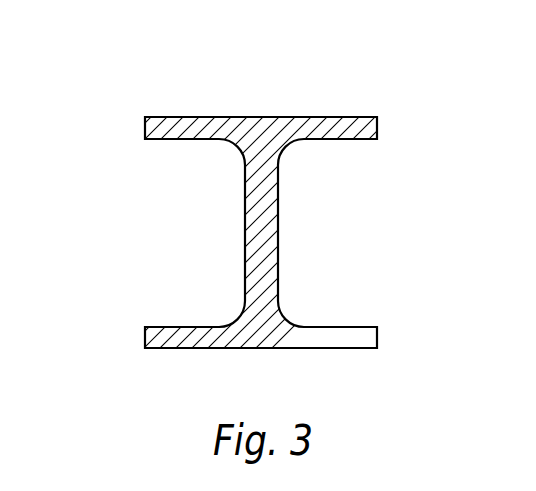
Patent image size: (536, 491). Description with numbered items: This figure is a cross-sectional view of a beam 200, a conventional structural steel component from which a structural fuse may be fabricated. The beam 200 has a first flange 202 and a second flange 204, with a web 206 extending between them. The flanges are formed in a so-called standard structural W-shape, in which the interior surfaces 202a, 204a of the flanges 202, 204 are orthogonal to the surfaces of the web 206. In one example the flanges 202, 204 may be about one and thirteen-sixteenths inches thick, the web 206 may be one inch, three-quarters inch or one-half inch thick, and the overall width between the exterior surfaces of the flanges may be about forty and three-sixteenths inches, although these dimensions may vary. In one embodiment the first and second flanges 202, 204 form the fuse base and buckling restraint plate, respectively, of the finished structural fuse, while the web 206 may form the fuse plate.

The beam 200 is at (152, 78).
The first flange 202 is at (341, 117).
The interior surface of first flange 202a is at (341, 140).
The second flange 204 is at (341, 348).
The interior surface of second flange 204a is at (341, 327).
The web 206 is at (245, 240).